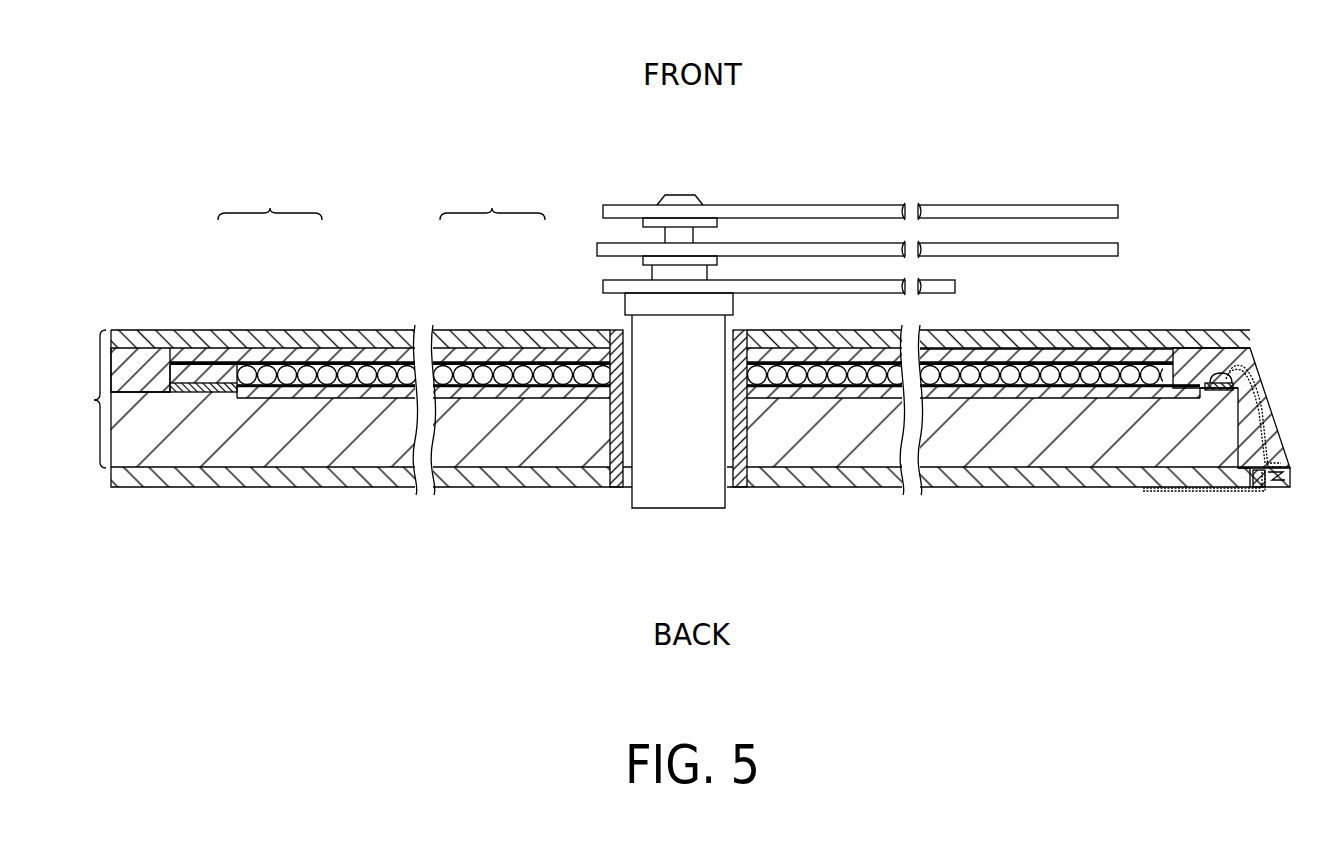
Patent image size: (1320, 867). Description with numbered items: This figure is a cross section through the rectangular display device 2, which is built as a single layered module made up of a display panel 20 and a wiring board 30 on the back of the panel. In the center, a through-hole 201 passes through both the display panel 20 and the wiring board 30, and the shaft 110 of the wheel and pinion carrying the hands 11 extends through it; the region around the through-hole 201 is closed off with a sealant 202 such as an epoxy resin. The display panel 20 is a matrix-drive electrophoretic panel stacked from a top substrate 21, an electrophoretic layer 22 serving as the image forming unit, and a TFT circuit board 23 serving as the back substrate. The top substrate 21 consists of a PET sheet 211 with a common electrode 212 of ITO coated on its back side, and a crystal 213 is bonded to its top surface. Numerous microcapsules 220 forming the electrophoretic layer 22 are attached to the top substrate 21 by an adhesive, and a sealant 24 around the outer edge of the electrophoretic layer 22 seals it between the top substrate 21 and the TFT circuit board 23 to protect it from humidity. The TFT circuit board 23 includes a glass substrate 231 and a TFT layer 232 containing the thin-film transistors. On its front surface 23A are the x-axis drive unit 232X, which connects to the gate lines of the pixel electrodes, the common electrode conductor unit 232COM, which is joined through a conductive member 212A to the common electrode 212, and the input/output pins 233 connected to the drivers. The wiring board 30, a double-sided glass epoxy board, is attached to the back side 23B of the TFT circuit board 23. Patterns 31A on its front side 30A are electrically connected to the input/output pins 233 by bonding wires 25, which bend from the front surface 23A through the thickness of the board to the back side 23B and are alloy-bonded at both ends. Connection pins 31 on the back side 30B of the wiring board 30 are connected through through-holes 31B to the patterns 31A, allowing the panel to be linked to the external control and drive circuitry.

The display device 2 is at (1148, 298).
The hands 11 is at (858, 290).
The shaft 110 is at (627, 322).
The display panel 20 is at (84, 399).
The top substrate 21 is at (270, 201).
The PET sheet 211 is at (245, 352).
The common electrode 212 is at (312, 352).
The conductive member 212A is at (200, 348).
The electrophoretic layer 22 is at (390, 362).
The microcapsules 220 is at (356, 362).
The TFT circuit board 23 is at (492, 200).
The glass substrate 231 is at (453, 396).
The TFT layer 232 is at (500, 364).
The common electrode conductor unit 232COM is at (188, 393).
The x-axis drive unit 232X is at (1157, 491).
The front surface 23A is at (156, 346).
The back side 23B is at (294, 472).
The sealant 24 is at (126, 334).
The bonding wires 25 is at (1247, 378).
The through-hole 201 is at (713, 472).
The sealant 202 is at (617, 490).
The crystal 213 is at (1058, 343).
The input/output pins 233 is at (1214, 392).
The wiring board 30 is at (111, 476).
The front side 30A is at (1110, 466).
The back side 30B is at (1000, 490).
The connection pins 31 is at (1181, 494).
The patterns 31A is at (1265, 447).
The through-holes 31B is at (1280, 482).